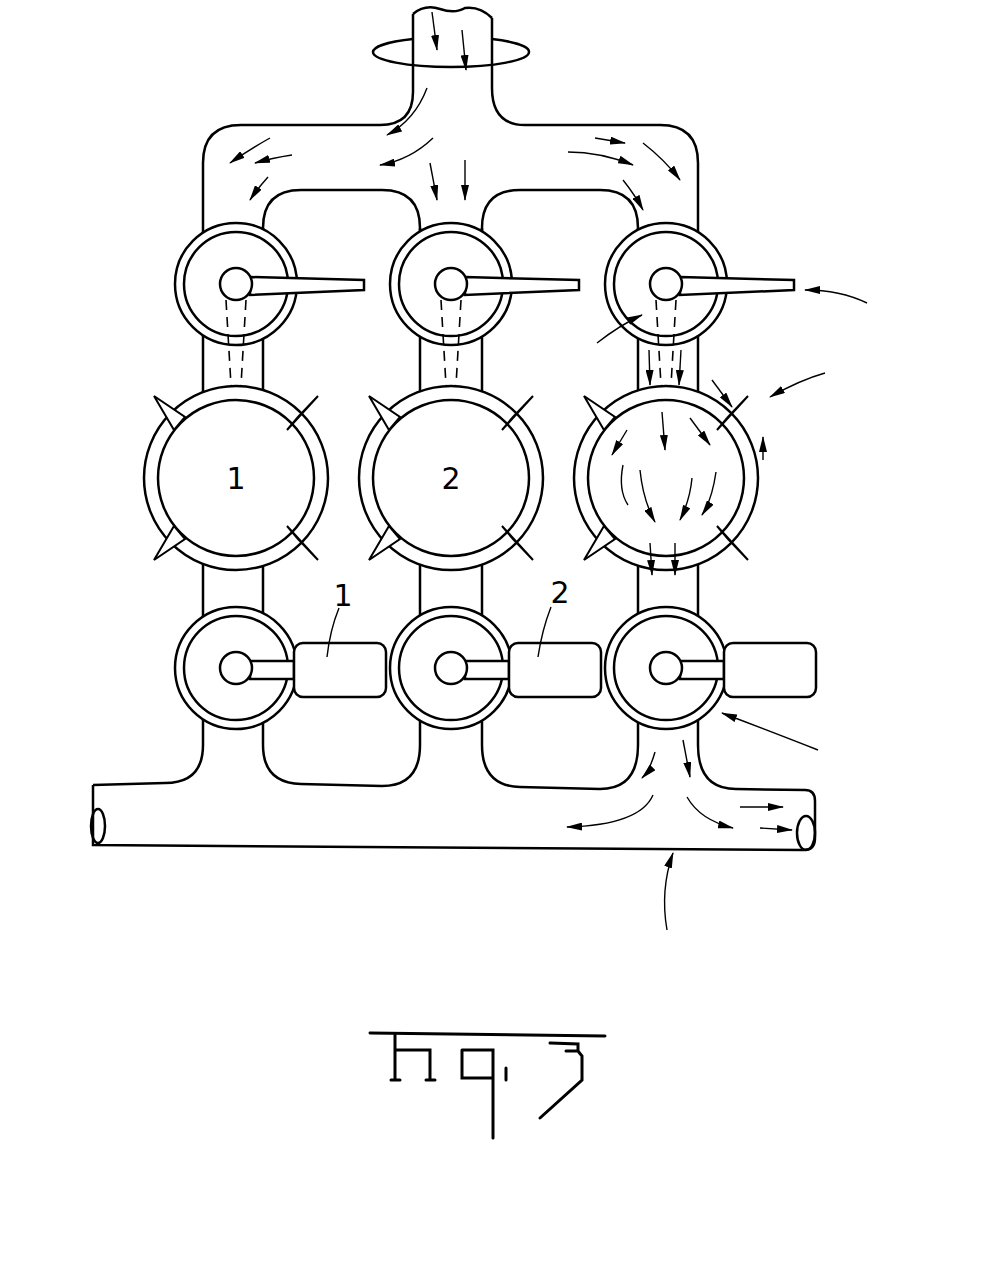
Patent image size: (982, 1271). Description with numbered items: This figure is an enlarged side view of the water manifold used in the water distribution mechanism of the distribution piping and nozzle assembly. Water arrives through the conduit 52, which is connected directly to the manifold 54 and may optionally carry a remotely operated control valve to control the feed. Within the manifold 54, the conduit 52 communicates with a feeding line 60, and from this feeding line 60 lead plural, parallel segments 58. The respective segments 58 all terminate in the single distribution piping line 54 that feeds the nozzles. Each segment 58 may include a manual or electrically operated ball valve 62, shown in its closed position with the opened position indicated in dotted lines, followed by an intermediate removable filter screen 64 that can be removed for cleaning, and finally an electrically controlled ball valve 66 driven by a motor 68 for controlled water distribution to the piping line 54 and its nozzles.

The conduit 52 is at (495, 88).
The manifold 54 is at (688, 138).
The parallel segments 58 is at (203, 194).
The feeding line 60 is at (579, 135).
The ball valve 62 is at (727, 247).
The removable filter screen 64 is at (755, 478).
The electrically controlled ball valve 66 is at (715, 628).
The motor 68 is at (774, 652).